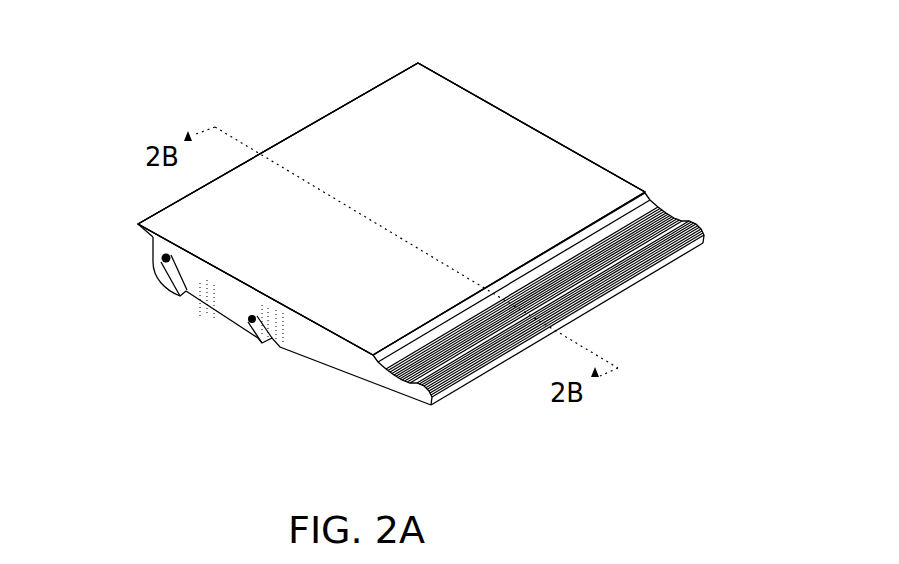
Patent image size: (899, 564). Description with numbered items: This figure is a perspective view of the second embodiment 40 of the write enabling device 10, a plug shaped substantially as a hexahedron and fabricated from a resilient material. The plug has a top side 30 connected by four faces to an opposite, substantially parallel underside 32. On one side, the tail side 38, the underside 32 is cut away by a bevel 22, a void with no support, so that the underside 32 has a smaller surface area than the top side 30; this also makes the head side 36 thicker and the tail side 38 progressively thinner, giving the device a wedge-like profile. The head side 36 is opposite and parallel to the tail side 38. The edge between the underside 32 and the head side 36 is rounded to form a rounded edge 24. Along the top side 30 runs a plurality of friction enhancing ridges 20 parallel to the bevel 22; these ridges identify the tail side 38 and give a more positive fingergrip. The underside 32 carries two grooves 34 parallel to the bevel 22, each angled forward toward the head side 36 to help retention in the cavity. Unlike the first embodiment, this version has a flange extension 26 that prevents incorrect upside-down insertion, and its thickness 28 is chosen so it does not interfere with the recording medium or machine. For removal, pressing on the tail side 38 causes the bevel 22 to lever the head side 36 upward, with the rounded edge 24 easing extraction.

The write enabling device 10 is at (258, 37).
The second embodiment 40 is at (523, 20).
The top side 30 is at (578, 150).
The friction enhancing ridges 20 is at (657, 205).
The tail side 38 is at (675, 290).
The flange extension 26 is at (145, 219).
The thickness 28 is at (138, 226).
The head side 36 is at (150, 258).
The groove 34 is at (183, 303).
The rounded edge 24 is at (165, 308).
The underside 32 is at (216, 312).
The bevel 22 is at (372, 430).